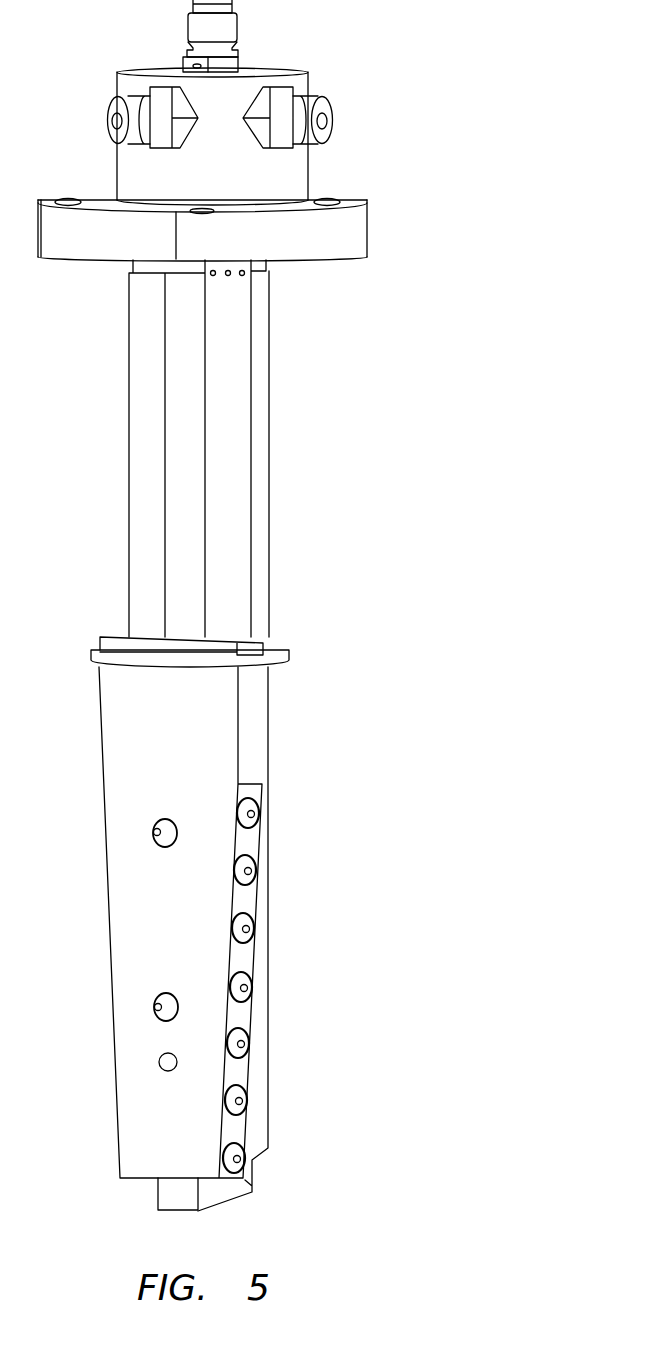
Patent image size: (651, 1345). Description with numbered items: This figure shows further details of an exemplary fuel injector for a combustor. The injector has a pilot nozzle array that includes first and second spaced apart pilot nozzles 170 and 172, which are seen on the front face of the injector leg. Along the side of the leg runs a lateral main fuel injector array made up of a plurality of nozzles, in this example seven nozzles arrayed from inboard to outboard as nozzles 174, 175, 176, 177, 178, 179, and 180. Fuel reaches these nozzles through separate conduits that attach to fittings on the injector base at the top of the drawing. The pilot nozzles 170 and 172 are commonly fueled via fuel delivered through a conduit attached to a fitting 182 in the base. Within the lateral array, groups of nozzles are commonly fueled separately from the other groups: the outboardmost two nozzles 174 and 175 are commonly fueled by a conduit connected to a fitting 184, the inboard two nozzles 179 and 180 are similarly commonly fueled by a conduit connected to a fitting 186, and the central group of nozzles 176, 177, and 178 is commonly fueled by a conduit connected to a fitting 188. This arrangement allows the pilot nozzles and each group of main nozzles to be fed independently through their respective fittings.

The pilot nozzle 170 is at (154, 828).
The pilot nozzle 172 is at (156, 1013).
The nozzle 174 is at (244, 1150).
The nozzle 175 is at (246, 1092).
The nozzle 176 is at (248, 1036).
The nozzle 177 is at (251, 980).
The nozzle 178 is at (253, 922).
The nozzle 179 is at (256, 864).
The nozzle 180 is at (259, 806).
The fitting 182 is at (157, 133).
The fitting 184 is at (190, 25).
The fitting 186 is at (112, 100).
The fitting 188 is at (297, 100).